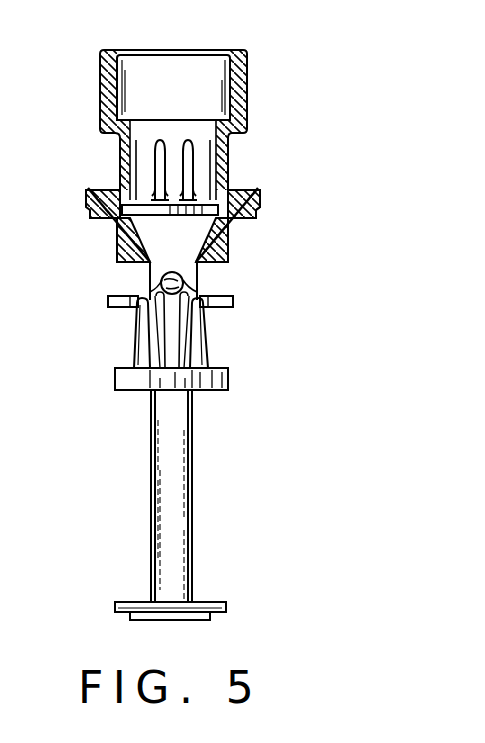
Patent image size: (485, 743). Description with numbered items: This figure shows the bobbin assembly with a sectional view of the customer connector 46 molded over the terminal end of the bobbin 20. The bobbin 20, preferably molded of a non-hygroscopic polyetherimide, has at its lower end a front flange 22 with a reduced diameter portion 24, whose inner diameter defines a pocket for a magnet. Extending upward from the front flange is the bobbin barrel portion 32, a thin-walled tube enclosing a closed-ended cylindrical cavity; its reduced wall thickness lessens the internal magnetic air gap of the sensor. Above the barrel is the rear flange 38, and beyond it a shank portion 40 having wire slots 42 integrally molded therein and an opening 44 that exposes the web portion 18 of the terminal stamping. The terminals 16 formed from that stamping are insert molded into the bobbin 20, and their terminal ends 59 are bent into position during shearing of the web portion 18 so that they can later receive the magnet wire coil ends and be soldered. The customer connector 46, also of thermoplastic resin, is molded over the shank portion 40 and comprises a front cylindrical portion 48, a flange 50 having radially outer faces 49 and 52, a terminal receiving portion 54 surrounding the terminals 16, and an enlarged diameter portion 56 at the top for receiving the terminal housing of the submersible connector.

The customer connector 46 is at (191, 110).
The enlarged diameter portion 56 is at (105, 80).
The terminal receiving portion 54 is at (118, 148).
The terminals 16 is at (190, 165).
The radially outer face 49 is at (97, 220).
The flange 50 is at (262, 195).
The radially outer face 52 is at (258, 218).
The front cylindrical portion 48 is at (120, 243).
The shank portion 40 is at (125, 265).
The opening 44 is at (155, 280).
The web portion 18 is at (182, 290).
The terminal ends 59 is at (108, 300).
The wire slots 42 is at (140, 338).
The rear flange 38 is at (228, 378).
The bobbin 20 is at (161, 517).
The bobbin barrel portion 32 is at (192, 497).
The front flange 22 is at (120, 616).
The reduced diameter portion 24 is at (205, 616).